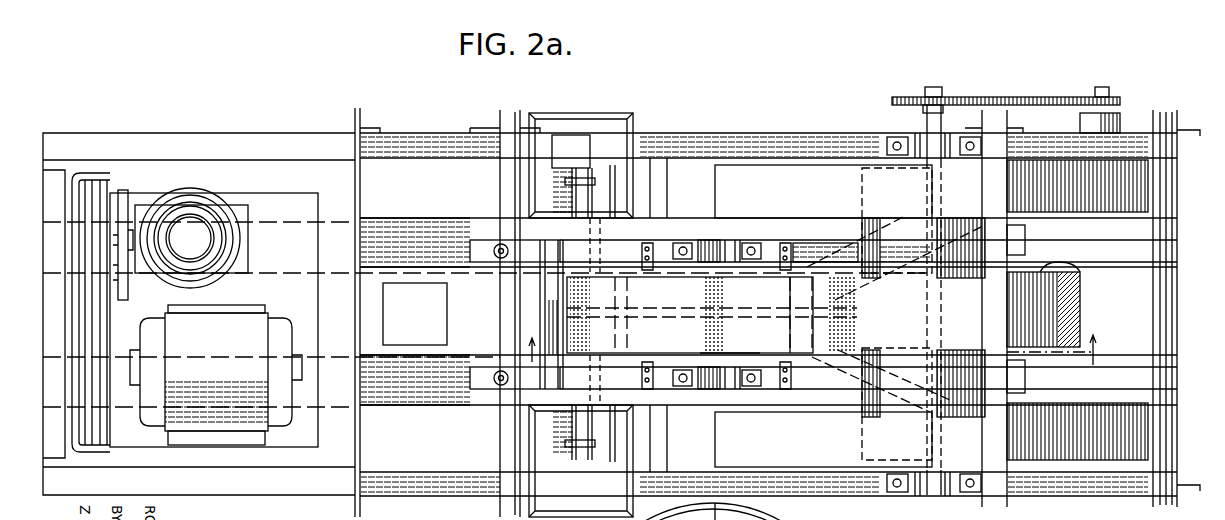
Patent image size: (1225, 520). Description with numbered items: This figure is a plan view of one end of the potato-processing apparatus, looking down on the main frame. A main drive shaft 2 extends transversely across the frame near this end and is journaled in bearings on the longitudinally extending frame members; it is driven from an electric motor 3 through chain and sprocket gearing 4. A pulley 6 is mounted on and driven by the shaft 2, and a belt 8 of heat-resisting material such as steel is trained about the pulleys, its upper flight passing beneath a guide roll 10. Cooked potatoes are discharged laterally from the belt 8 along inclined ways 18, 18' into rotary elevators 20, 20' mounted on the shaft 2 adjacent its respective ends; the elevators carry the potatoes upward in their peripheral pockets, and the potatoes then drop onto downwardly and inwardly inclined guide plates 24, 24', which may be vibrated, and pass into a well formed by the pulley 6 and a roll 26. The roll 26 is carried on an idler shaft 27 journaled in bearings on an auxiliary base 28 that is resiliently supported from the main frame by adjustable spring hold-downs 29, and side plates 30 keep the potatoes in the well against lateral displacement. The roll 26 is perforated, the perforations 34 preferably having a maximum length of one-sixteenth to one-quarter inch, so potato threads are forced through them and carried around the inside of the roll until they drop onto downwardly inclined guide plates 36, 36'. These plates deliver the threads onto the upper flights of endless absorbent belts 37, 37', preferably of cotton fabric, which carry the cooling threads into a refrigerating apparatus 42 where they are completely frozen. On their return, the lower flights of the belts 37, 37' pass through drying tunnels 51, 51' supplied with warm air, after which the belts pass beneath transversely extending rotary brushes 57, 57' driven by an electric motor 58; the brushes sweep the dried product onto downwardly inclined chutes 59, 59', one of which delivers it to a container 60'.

The main drive shaft 2 is at (941, 123).
The electric motor 3 is at (1118, 135).
The chain and sprocket gearing 4 is at (1043, 97).
The pulley 6 is at (1080, 315).
The belt 8 is at (1042, 272).
The guide roll 10 is at (818, 344).
The inclined way 18 is at (897, 404).
The inclined way 18' is at (897, 220).
The rotary elevator 20 is at (1077, 421).
The rotary elevator 20' is at (1077, 200).
The guide plate 24 is at (881, 367).
The guide plate 24' is at (896, 259).
The roll 26 is at (712, 315).
The idler shaft 27 is at (733, 352).
The auxiliary base 28 is at (805, 246).
The spring hold-downs 29 is at (498, 370).
The side plates 30 is at (805, 320).
The perforations 34 is at (870, 311).
The guide plate 36 is at (733, 389).
The guide plate 36' is at (718, 243).
The endless absorbent belt 37 is at (645, 340).
The endless absorbent belt 37' is at (609, 231).
The refrigerating apparatus 42 is at (216, 363).
The drying tunnel 51 is at (415, 396).
The drying tunnel 51' is at (415, 231).
The rotary brush 57 is at (598, 413).
The rotary brush 57' is at (603, 208).
The electric motor 58 is at (571, 151).
The chute 59 is at (613, 461).
The chute 59' is at (628, 191).
The container 60' is at (601, 165).